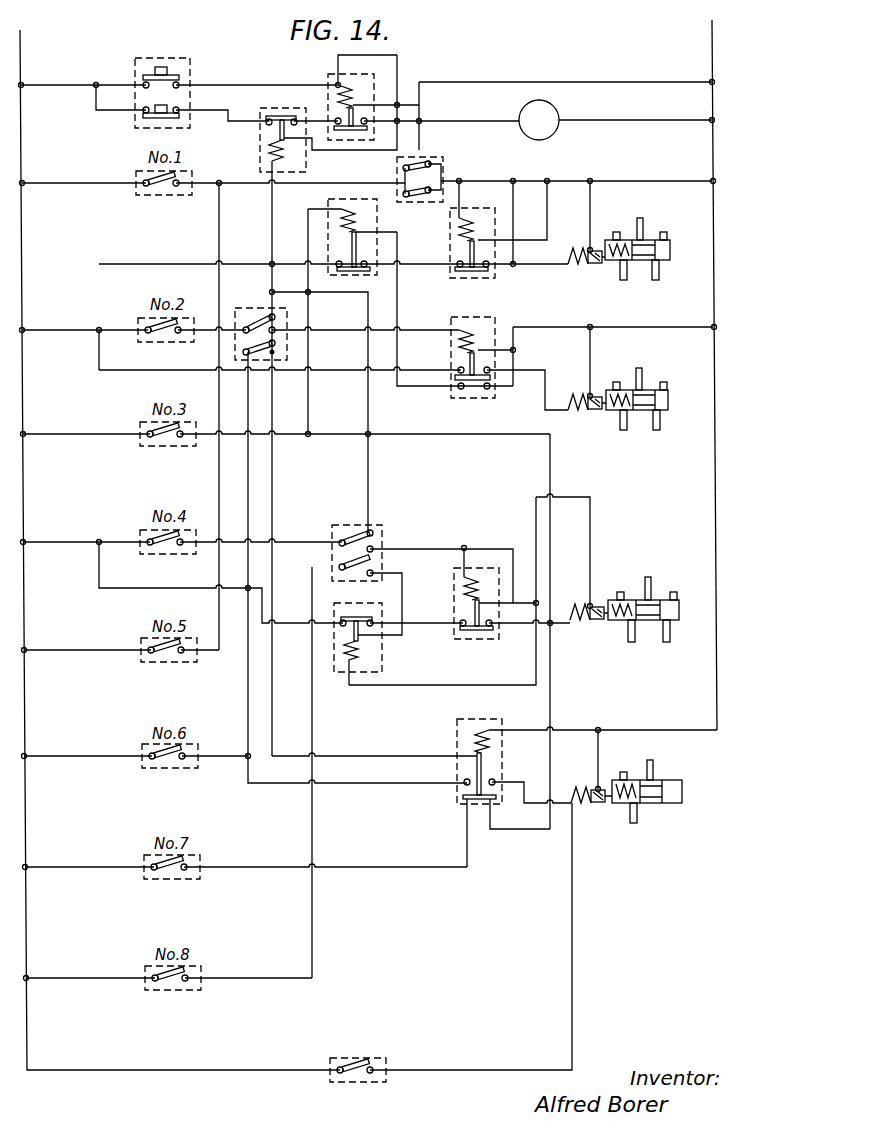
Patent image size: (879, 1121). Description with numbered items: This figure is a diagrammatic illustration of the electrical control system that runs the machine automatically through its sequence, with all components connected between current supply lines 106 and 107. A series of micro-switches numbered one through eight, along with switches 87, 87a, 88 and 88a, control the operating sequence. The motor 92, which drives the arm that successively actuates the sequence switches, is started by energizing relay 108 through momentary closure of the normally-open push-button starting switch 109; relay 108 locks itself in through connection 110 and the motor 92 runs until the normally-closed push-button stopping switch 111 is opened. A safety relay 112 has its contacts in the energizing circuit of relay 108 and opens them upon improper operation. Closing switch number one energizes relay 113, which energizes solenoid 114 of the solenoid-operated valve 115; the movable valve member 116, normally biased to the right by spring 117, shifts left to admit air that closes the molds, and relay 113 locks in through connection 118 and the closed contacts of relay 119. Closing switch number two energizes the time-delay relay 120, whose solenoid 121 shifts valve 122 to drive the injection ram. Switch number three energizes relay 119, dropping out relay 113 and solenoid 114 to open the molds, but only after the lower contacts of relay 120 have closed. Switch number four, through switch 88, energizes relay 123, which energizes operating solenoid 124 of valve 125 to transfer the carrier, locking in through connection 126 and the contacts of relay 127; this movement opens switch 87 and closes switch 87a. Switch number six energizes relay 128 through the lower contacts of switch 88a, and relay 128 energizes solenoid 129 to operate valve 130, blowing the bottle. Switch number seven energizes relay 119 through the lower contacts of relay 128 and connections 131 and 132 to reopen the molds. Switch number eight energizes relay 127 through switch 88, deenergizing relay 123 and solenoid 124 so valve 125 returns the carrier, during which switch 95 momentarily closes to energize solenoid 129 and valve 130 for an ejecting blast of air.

The current supply line 106 is at (21, 47).
The current supply line 107 is at (712, 40).
The relay 108 is at (338, 76).
The push-button starting switch 109 is at (180, 78).
The connection 110 is at (378, 72).
The push-button stopping switch 111 is at (143, 119).
The safety relay 112 is at (260, 143).
The motor 92 is at (560, 112).
The switch 87 is at (425, 200).
The switch 87a is at (432, 162).
The connection 118 is at (482, 181).
The relay 119 is at (328, 204).
The relay 113 is at (450, 245).
The solenoid 114 is at (570, 262).
The solenoid operated valve 115 is at (668, 247).
The movable valve member 116 is at (648, 255).
The spring 117 is at (611, 240).
The switch 88a is at (247, 314).
The relay 120 is at (470, 311).
The solenoid 121 is at (574, 392).
The solenoid-operated valve 122 is at (672, 392).
The connection 132 is at (310, 404).
The switch 88 is at (357, 525).
The connection 126 is at (497, 548).
The relay 123 is at (474, 640).
The operating solenoid 124 is at (571, 600).
The valve 125 is at (680, 600).
The relay 127 is at (382, 661).
The connection 131 is at (560, 692).
The relay 128 is at (457, 729).
The solenoid 129 is at (585, 790).
The valve 130 is at (690, 784).
The switch 95 is at (346, 1060).